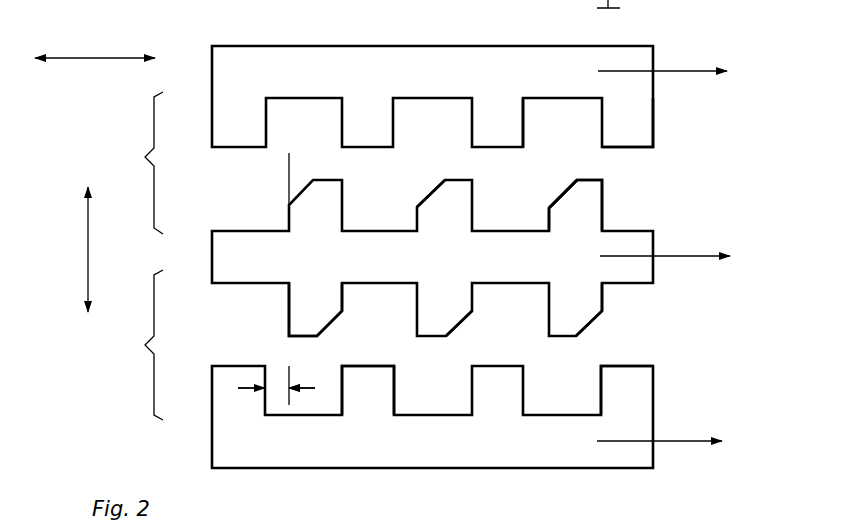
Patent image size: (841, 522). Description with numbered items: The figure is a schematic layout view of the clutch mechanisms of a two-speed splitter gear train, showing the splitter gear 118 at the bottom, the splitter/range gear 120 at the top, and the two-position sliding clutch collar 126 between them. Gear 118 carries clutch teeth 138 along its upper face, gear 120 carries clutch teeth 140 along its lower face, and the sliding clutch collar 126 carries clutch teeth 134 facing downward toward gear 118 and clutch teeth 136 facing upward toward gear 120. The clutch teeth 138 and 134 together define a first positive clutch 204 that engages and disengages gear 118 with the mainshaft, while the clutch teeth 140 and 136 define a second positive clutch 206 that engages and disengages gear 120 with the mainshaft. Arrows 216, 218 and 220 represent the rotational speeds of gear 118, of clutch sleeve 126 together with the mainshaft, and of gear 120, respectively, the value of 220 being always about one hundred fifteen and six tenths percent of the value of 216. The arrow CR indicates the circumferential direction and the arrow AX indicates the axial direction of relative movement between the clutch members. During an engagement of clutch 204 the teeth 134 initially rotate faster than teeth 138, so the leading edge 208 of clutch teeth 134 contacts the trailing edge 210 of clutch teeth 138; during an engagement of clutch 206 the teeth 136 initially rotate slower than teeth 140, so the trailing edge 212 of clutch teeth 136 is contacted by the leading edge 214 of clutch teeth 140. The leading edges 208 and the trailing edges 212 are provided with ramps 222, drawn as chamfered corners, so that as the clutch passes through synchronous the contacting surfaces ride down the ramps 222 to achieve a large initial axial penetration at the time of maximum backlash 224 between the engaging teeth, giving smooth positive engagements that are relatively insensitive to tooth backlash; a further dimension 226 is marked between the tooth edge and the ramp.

The splitter gear 118 is at (236, 437).
The splitter/range gear 120 is at (252, 68).
The sliding clutch collar 126 is at (232, 257).
The clutch teeth 134 is at (298, 316).
The clutch teeth 136 is at (590, 210).
The clutch teeth 138 is at (373, 416).
The clutch teeth 140 is at (632, 126).
The first positive clutch 204 is at (130, 345).
The second positive clutch 206 is at (129, 163).
The leading edge 208 is at (602, 298).
The trailing edge 210 is at (601, 380).
The trailing edge 212 is at (566, 194).
The leading edge 214 is at (523, 133).
The arrow representing rotational speed of gear 118 216 is at (684, 441).
The arrow representing rotational speed of clutch sleeve and mainshaft 218 is at (684, 262).
The arrow representing rotational speed of gear 120 220 is at (693, 74).
The ramps 222 is at (432, 194).
The backlash 224 is at (283, 398).
The offset distance 226 is at (311, 179).
The circumferential direction arrow CR is at (95, 57).
The axial direction arrow AX is at (88, 242).